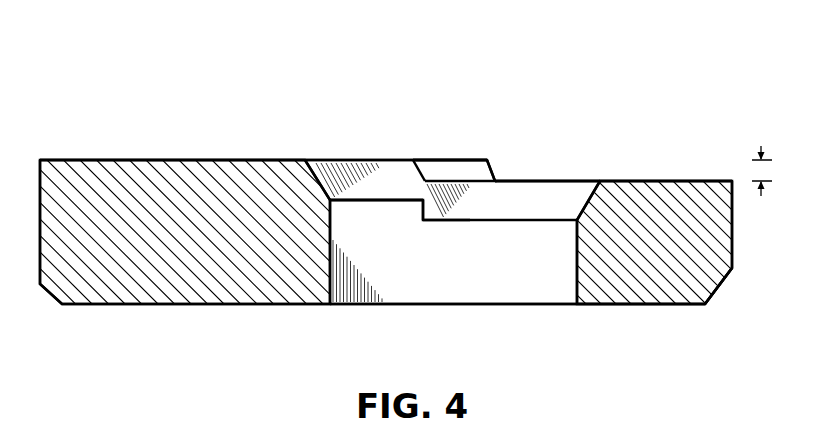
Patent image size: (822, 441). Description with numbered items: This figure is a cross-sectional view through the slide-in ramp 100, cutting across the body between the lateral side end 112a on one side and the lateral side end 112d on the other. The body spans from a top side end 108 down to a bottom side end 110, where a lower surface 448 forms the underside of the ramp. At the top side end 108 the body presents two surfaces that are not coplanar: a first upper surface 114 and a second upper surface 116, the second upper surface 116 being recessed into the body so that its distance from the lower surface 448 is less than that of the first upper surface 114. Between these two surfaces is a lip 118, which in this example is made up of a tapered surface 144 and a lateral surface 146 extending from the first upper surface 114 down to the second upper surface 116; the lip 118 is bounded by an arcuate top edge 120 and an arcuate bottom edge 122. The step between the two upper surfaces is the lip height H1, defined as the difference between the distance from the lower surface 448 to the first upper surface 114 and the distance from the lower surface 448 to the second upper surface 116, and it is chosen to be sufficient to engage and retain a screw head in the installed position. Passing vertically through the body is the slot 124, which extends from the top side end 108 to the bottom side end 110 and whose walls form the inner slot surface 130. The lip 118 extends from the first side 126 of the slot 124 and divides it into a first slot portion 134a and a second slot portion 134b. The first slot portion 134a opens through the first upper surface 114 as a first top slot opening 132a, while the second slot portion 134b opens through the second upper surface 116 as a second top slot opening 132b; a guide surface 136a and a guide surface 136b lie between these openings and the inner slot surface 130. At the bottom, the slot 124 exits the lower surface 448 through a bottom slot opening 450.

The slide-in ramp 100 is at (730, 62).
The top side end 108 is at (720, 181).
The bottom side end 110 is at (700, 305).
The lateral side end 112a is at (40, 204).
The lateral side end 112d is at (732, 240).
The first upper surface 114 is at (205, 158).
The second upper surface 116 is at (685, 178).
The lip 118 is at (460, 160).
The top edge 120 is at (447, 160).
The bottom edge 122 is at (453, 183).
The slot 124 is at (595, 188).
The first side 126 is at (423, 181).
The inner slot surface 130 is at (463, 296).
The first top slot opening 132a is at (373, 160).
The second top slot opening 132b is at (578, 181).
The first slot portion 134a is at (398, 160).
The second slot portion 134b is at (540, 181).
The guide surface 136a is at (390, 173).
The guide surface 136b is at (560, 187).
The tapered surface 144 is at (476, 160).
The lateral surface 146 is at (500, 172).
The lower surface 448 is at (648, 310).
The bottom slot opening 450 is at (542, 305).
The height H1 is at (773, 171).